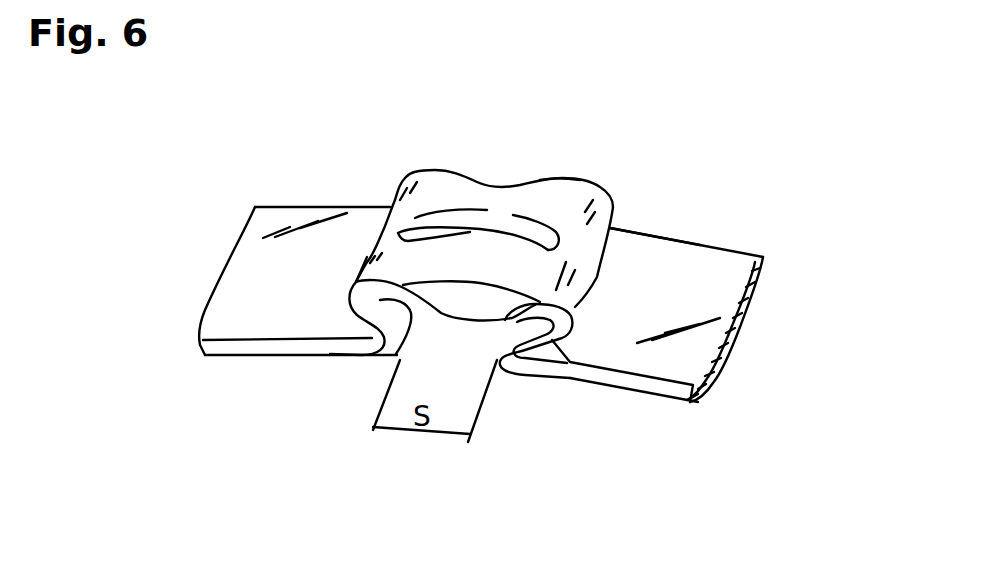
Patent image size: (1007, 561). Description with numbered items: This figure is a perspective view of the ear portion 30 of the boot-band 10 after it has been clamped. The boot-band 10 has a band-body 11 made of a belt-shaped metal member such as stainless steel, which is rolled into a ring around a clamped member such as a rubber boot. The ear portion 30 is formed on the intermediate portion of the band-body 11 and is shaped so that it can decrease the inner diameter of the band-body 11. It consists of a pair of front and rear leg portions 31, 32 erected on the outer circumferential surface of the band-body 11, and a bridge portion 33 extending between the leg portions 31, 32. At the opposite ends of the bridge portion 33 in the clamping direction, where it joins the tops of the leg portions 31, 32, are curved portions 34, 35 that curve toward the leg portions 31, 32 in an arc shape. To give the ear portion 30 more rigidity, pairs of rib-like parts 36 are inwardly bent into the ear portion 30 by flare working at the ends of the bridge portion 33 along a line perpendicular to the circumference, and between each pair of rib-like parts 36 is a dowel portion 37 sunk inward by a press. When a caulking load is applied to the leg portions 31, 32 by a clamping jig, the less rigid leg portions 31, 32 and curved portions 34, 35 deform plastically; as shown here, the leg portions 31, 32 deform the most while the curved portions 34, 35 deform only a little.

The boot-band 10 is at (727, 227).
The band-body 11 is at (662, 237).
The ear portion 30 is at (527, 162).
The front leg portion 31 is at (568, 362).
The rear leg portion 32 is at (350, 352).
The bridge portion 33 is at (446, 186).
The curved portion 34 is at (586, 272).
The curved portion 35 is at (367, 260).
The rib-like part 36 is at (543, 180).
The dowel portion 37 is at (480, 227).